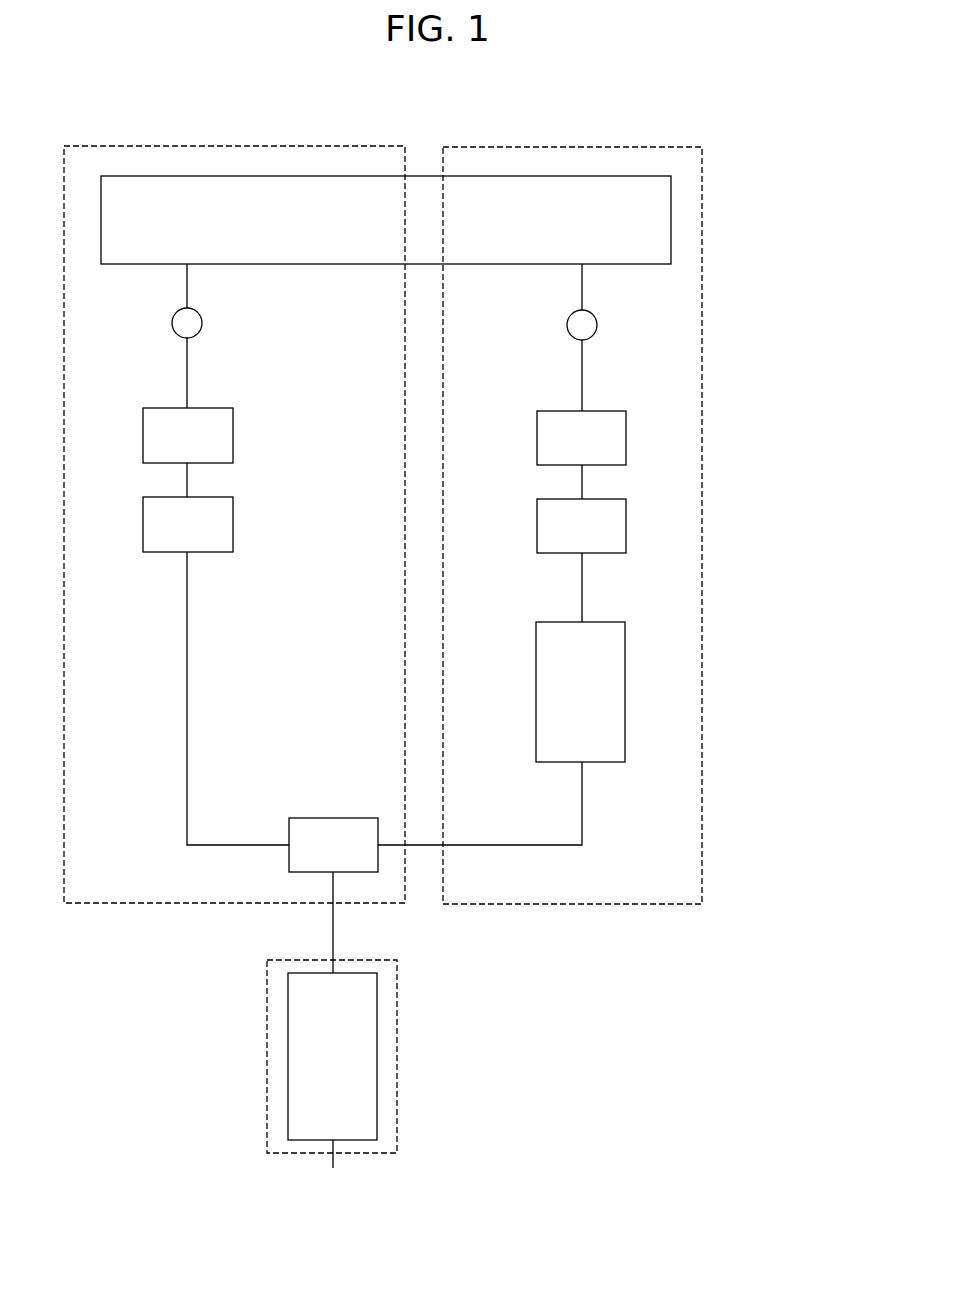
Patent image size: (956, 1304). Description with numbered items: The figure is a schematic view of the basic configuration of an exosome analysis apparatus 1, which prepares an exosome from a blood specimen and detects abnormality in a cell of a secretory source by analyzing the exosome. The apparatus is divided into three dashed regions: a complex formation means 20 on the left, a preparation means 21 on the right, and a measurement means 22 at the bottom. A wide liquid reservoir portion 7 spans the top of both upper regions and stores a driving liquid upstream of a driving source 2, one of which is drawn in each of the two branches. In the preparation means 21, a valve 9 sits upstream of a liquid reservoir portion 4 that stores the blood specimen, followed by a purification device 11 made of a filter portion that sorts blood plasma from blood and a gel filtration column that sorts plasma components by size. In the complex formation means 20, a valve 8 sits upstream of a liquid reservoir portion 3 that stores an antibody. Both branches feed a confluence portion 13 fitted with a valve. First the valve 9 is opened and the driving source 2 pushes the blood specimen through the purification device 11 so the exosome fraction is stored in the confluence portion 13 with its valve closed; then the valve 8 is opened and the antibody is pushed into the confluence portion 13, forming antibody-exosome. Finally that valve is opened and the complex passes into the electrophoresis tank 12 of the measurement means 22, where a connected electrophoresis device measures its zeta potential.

The exosome analysis apparatus 1 is at (744, 122).
The driving source 2 is at (202, 323).
The liquid reservoir portion 3 is at (233, 524).
The liquid reservoir portion 4 is at (626, 524).
The liquid reservoir portion 7 is at (133, 266).
The valve 8 is at (233, 436).
The valve 9 is at (626, 437).
The purification device 11 is at (625, 637).
The electrophoresis tank 12 is at (377, 1043).
The confluence portion 13 is at (334, 818).
The complex formation means 20 is at (330, 145).
The preparation means 21 is at (619, 146).
The measurement means 22 is at (398, 970).